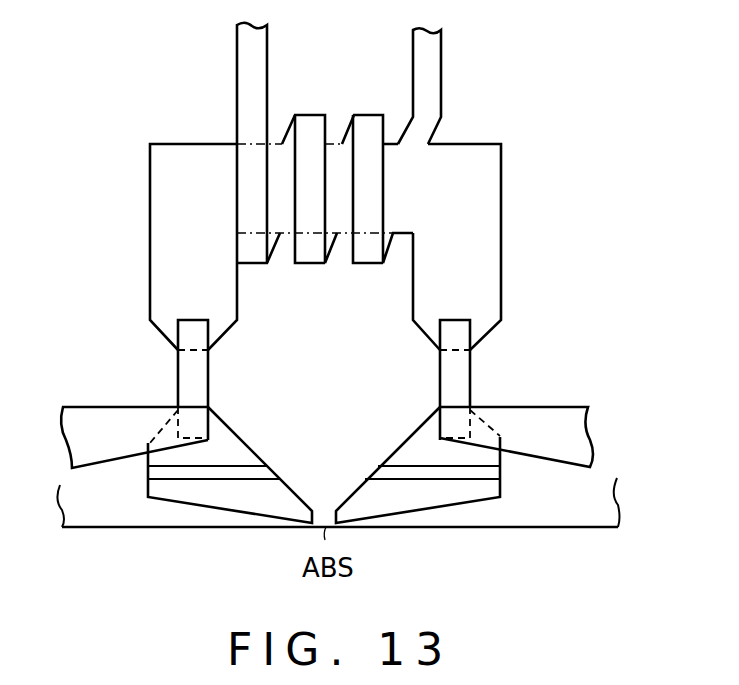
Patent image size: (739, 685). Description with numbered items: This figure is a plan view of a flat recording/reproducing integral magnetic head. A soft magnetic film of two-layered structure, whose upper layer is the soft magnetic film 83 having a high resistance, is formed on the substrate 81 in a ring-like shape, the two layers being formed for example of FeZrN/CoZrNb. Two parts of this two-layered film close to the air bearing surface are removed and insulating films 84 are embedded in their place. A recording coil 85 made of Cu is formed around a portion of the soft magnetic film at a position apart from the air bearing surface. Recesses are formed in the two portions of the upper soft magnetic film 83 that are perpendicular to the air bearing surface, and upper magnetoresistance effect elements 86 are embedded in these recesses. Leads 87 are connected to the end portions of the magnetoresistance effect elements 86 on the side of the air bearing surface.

The substrate 81 is at (99, 515).
The soft magnetic film 83 is at (185, 162).
The insulating film 84 is at (376, 467).
The recording coil 85 is at (432, 85).
The magnetoresistance effect element 86 is at (450, 390).
The lead 87 is at (92, 423).